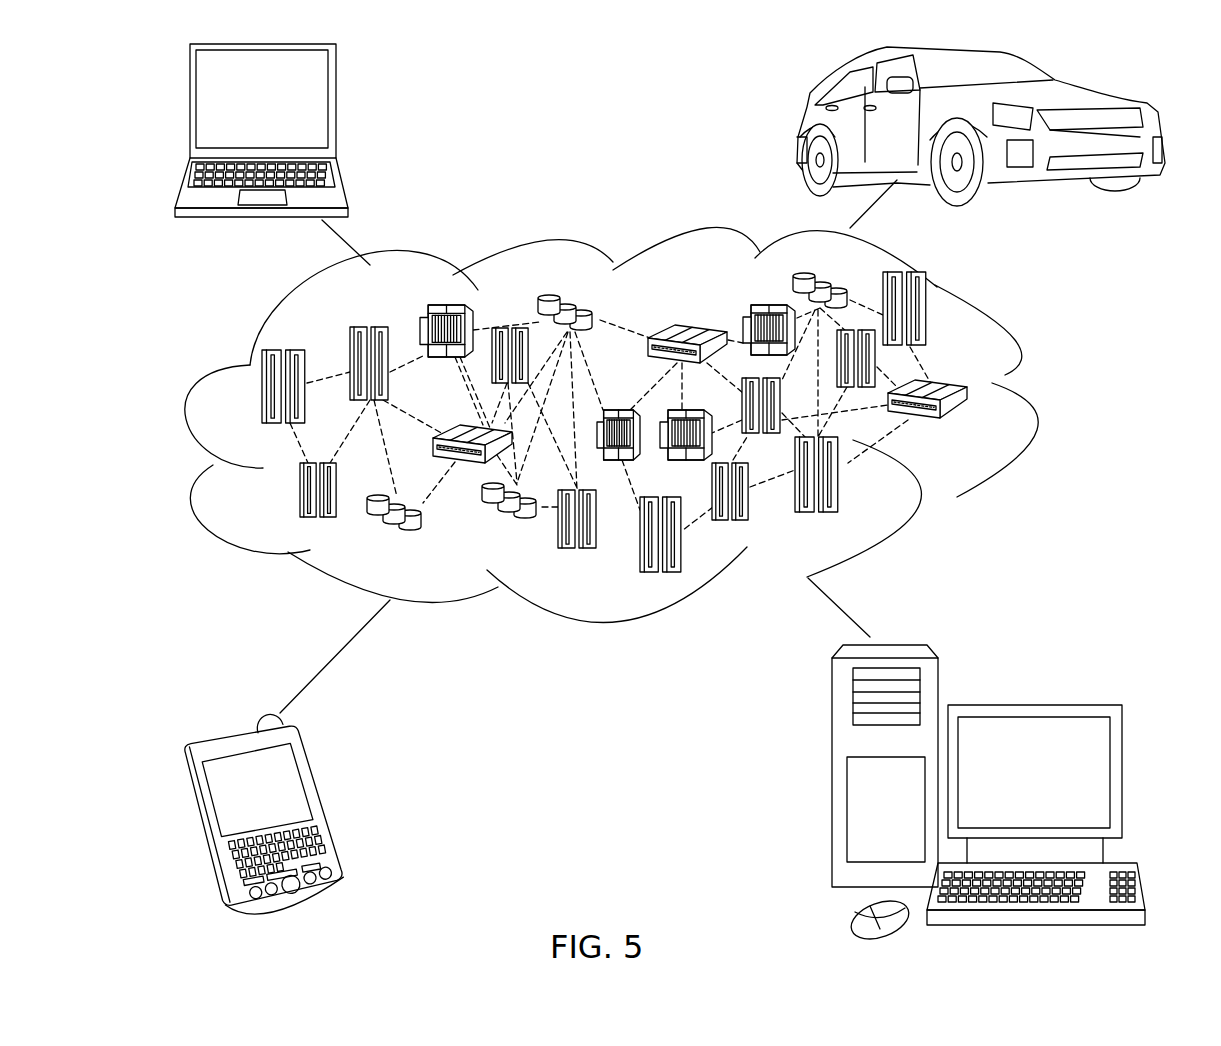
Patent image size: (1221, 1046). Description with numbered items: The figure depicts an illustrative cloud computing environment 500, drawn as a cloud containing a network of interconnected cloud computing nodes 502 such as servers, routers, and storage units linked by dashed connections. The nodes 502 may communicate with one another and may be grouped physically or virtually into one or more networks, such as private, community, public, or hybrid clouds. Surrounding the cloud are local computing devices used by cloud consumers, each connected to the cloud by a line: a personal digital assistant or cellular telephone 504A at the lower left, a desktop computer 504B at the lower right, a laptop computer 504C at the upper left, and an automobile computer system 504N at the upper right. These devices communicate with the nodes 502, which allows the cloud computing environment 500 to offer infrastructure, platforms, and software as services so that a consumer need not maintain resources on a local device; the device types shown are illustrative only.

The cloud computing environment 500 is at (1033, 398).
The cloud computing nodes 502 is at (978, 430).
The personal digital assistant (PDA) or cellular telephone 504A is at (323, 805).
The desktop computer 504B is at (1032, 705).
The laptop computer 504C is at (337, 110).
The automobile computer system 504N is at (800, 122).